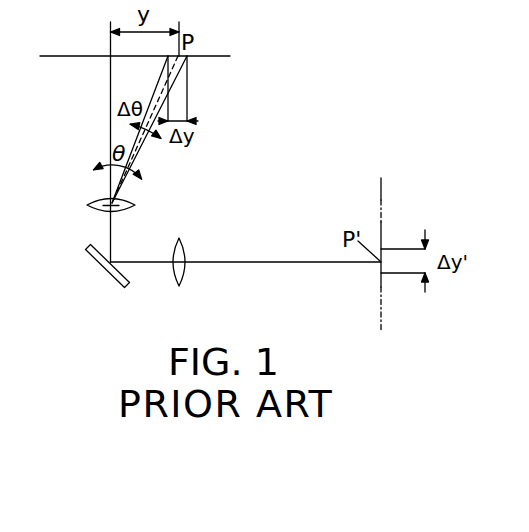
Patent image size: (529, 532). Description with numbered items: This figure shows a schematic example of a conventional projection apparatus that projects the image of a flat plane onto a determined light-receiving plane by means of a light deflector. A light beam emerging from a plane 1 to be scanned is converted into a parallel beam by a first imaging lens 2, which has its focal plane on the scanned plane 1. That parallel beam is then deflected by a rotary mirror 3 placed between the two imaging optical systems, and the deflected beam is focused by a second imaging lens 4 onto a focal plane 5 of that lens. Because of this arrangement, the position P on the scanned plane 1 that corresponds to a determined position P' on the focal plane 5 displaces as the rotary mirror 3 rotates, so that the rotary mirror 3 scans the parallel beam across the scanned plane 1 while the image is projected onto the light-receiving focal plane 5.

The plane to be scanned 1 is at (215, 56).
The first imaging lens 2 is at (88, 204).
The rotary mirror 3 is at (114, 280).
The second imaging lens 4 is at (185, 276).
The focal plane 5 is at (383, 283).